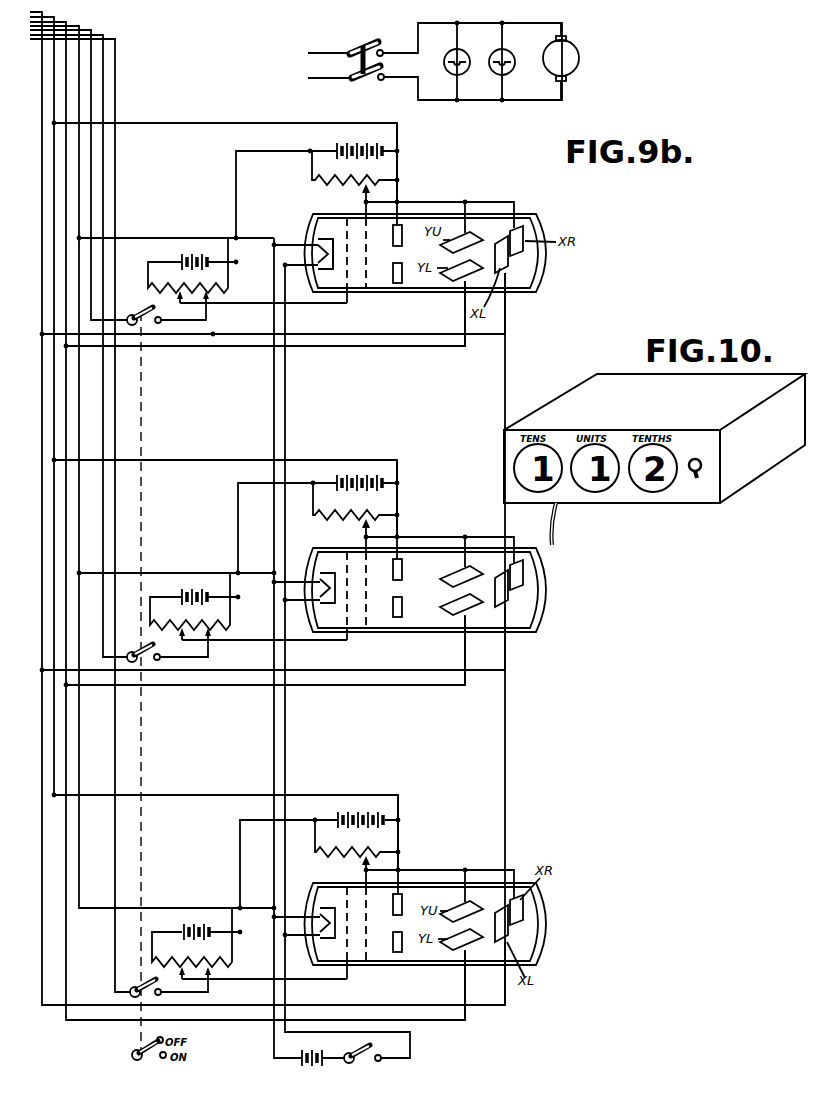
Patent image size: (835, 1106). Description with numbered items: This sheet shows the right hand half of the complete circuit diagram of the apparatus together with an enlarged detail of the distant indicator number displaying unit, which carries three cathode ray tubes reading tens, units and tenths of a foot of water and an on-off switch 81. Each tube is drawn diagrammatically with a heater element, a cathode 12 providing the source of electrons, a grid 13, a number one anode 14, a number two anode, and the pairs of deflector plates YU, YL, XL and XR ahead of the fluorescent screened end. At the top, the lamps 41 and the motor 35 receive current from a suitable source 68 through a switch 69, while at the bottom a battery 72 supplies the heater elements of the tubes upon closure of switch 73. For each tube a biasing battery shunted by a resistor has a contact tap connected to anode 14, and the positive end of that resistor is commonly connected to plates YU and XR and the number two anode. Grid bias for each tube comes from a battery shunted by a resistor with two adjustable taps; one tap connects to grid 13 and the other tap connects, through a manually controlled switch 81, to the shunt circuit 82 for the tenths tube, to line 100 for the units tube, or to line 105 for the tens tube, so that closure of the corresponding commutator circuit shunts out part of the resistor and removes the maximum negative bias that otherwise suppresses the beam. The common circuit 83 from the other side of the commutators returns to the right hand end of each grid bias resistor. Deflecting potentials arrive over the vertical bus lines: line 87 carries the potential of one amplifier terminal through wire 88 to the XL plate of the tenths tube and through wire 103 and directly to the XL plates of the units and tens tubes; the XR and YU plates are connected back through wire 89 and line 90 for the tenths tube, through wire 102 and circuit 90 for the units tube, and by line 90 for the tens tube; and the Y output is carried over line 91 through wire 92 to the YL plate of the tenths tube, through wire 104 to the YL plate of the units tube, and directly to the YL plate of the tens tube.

In FIG. 9B, the cathode 12 is at (321, 238).
In FIG. 9B, the grid 13 is at (348, 290).
In FIG. 9B, the anode number one 14 is at (370, 234).
In FIG. 9B, the motor 35 is at (575, 57).
In FIG. 9B, the lamps 41 is at (500, 76).
In FIG. 9B, the source 68 is at (308, 64).
In FIG. 9B, the switch 69 is at (395, 44).
In FIG. 9B, the battery 72 is at (310, 1066).
In FIG. 9B, the switch 73 is at (366, 1068).
In FIG. 10, the manually controlled switch 81 is at (693, 473).
In FIG. 9B, the shunt circuit 82 is at (91, 143).
In FIG. 9B, the common circuit 83 is at (79, 105).
In FIG. 9B, the line 87 is at (42, 52).
In FIG. 9B, the wire 88 is at (213, 334).
In FIG. 9B, the wire 89 is at (226, 123).
In FIG. 9B, the line 90 is at (54, 64).
In FIG. 9B, the line 91 is at (66, 83).
In FIG. 9B, the wire 92 is at (128, 346).
In FIG. 9B, the line 100 is at (103, 167).
In FIG. 9B, the wire 102 is at (226, 460).
In FIG. 9B, the wire 103 is at (398, 670).
In FIG. 9B, the wire 104 is at (340, 685).
In FIG. 9B, the line 105 is at (115, 191).